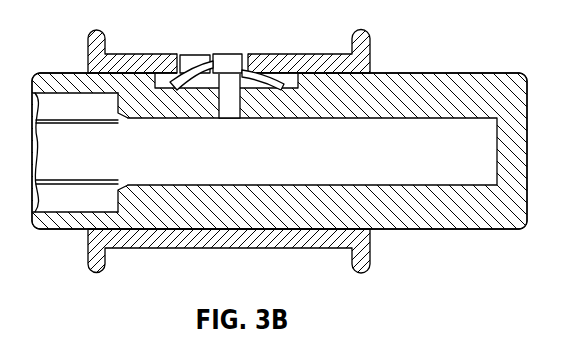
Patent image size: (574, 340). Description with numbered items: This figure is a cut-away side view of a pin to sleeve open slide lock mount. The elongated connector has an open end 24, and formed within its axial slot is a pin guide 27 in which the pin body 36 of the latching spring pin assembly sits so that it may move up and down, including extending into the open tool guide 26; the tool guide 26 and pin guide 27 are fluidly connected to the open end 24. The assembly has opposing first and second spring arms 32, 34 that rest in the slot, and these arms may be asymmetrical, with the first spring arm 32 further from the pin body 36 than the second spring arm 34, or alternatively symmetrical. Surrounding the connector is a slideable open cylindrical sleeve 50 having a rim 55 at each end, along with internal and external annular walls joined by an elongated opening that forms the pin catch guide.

The open end 24 is at (52, 165).
The open tool guide 26 is at (355, 166).
The pin guide 27 is at (246, 103).
The first spring arm 32 is at (197, 80).
The second spring arm 34 is at (255, 72).
The pin body 36 is at (230, 112).
The slideable open cylindrical sleeve 50 is at (323, 238).
The rim 55 is at (358, 62).